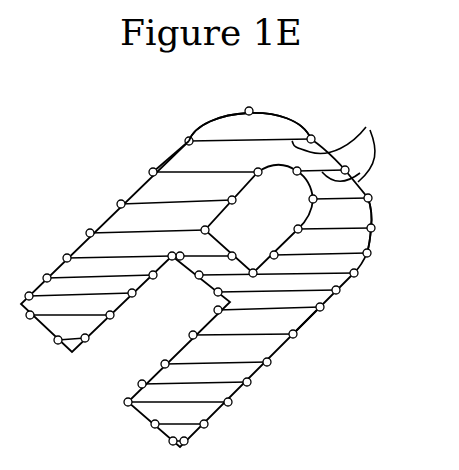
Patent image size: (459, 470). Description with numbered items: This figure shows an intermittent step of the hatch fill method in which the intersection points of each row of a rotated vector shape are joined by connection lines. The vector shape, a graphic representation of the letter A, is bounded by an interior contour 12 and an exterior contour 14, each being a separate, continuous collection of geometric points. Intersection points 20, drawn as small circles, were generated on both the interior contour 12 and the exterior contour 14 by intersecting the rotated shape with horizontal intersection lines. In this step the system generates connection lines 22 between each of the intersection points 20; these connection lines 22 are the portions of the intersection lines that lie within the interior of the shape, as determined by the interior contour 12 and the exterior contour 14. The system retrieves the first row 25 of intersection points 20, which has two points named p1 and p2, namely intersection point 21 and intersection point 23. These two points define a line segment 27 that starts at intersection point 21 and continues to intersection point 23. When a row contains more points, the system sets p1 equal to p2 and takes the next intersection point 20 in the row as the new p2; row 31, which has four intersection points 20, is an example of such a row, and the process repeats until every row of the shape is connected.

The interior contour 12 is at (218, 216).
The exterior contour 14 is at (303, 323).
The intersection points 20 is at (369, 247).
The intersection point 21 is at (189, 137).
The connection lines 22 is at (343, 143).
The intersection point 23 is at (312, 136).
The first row 25 is at (168, 141).
The line segment 27 is at (252, 142).
The row 31 is at (139, 170).